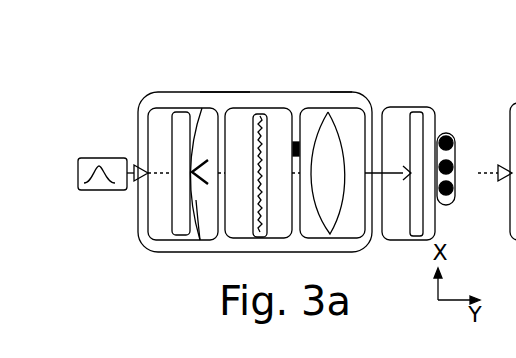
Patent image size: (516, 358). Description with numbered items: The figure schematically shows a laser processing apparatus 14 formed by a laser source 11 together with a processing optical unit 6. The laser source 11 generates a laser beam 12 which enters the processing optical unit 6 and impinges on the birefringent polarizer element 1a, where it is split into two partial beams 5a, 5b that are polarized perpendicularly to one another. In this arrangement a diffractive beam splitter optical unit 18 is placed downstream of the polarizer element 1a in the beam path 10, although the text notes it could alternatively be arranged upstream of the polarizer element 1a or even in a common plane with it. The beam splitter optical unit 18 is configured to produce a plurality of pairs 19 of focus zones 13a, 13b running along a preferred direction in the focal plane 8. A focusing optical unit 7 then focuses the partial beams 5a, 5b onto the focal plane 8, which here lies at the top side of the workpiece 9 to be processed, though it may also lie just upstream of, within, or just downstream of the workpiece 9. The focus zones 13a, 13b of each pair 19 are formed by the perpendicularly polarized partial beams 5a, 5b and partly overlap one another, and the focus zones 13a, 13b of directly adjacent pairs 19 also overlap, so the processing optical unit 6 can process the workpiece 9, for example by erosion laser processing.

The laser processing apparatus 14 is at (176, 55).
The polarizer element 1a is at (163, 102).
The first partial beam 5a is at (201, 108).
The second partial beam 5b is at (200, 240).
The processing optical unit 6 is at (228, 92).
The focusing optical unit 7 is at (352, 91).
The diffractive beam splitter optical unit 18 is at (276, 107).
The beam path 10 is at (311, 107).
The focal plane 8 is at (410, 242).
The workpiece 9 is at (413, 122).
The pair of focus zones 19 is at (455, 163).
The first focus zone 13a is at (452, 136).
The second focus zone 13b is at (453, 195).
The laser source 11 is at (103, 193).
The laser beam 12 is at (136, 166).